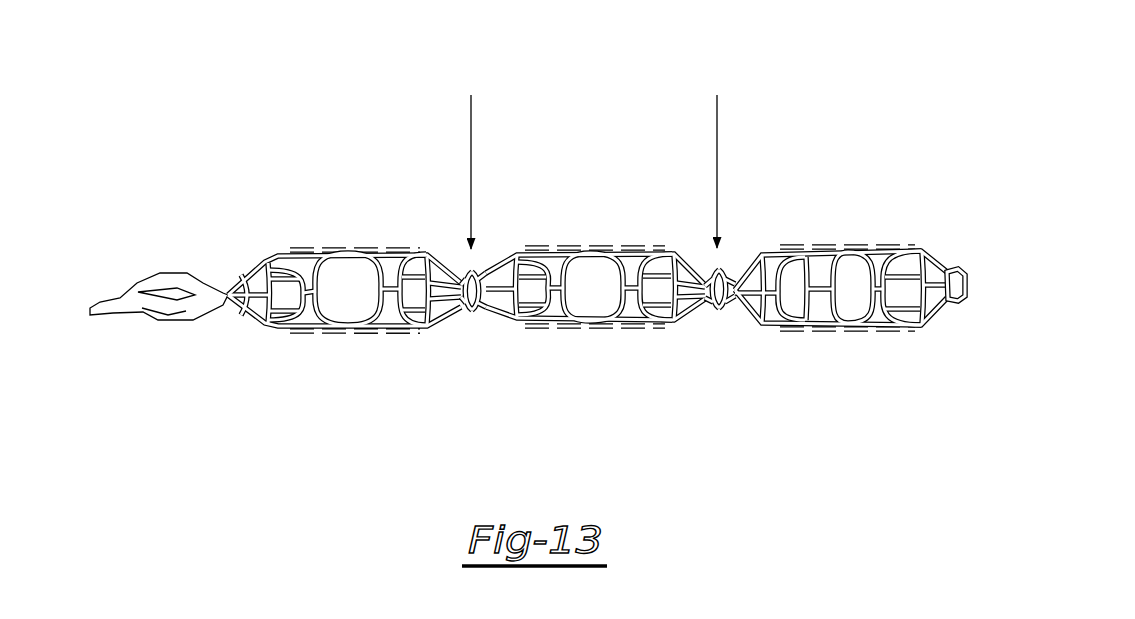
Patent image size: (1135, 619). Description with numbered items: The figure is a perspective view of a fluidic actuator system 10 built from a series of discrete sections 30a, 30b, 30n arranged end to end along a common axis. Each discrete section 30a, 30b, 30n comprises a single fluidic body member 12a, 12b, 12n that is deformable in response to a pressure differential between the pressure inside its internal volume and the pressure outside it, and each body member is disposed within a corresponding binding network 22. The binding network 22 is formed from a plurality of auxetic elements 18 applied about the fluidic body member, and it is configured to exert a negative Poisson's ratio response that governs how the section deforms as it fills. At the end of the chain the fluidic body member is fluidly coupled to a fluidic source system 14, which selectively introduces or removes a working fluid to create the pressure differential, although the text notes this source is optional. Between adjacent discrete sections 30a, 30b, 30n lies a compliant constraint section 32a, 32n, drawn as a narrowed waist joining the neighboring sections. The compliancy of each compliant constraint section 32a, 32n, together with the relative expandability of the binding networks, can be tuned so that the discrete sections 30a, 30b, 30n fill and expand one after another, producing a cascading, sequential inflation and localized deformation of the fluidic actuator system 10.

The fluidic actuator system 10 is at (907, 94).
The fluidic body member 12a is at (843, 262).
The fluidic body member 12b is at (596, 262).
The fluidic body member 12n is at (349, 275).
The fluidic source system 14 is at (958, 270).
The auxetic element 18 is at (327, 337).
The binding network 22 is at (378, 340).
The discrete section 30a is at (807, 217).
The discrete section 30b is at (572, 220).
The discrete section 30n is at (292, 238).
The compliant constraint section 32a is at (716, 320).
The compliant constraint section 32n is at (472, 318).